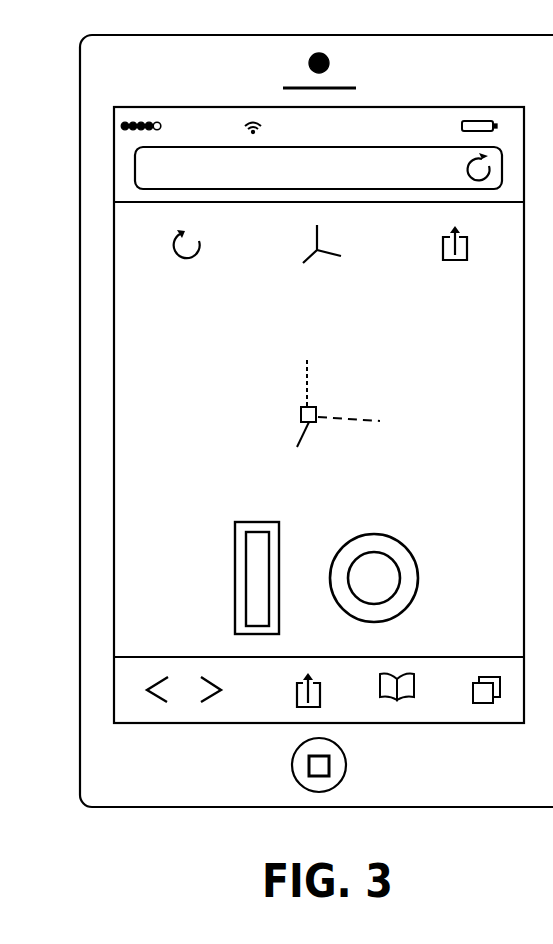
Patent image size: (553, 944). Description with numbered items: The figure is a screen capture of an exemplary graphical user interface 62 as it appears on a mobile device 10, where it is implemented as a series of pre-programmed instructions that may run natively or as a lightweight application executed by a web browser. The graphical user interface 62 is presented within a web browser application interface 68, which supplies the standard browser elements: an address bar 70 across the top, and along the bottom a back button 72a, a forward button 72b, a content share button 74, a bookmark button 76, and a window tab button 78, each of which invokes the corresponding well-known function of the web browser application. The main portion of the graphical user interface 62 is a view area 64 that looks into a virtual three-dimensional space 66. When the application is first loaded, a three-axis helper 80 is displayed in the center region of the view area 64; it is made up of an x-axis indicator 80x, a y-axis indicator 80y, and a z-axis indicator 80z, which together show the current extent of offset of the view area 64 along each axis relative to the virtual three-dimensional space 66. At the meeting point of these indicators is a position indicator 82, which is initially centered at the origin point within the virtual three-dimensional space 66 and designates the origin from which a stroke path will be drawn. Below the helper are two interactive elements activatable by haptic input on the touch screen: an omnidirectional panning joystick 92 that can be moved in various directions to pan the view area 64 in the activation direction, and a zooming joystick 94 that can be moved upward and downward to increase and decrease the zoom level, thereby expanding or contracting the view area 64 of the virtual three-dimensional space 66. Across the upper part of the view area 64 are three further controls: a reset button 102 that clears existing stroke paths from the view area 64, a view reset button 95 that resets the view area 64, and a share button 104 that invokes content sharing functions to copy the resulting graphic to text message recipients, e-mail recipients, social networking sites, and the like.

The mobile device 10 is at (80, 592).
The graphical user interface 62 is at (114, 470).
The view area 64 is at (205, 477).
The virtual three-dimensional space 66 is at (344, 510).
The web browser application interface 68 is at (115, 689).
The address bar 70 is at (137, 169).
The back button 72a is at (159, 700).
The forward button 72b is at (208, 700).
The content share button 74 is at (297, 699).
The bookmark button 76 is at (395, 700).
The window tab button 78 is at (483, 703).
The three-axis helper 80 is at (304, 406).
The x-axis indicator 80x is at (353, 420).
The y-axis indicator 80y is at (308, 372).
The z-axis indicator 80z is at (297, 447).
The position indicator 82 is at (318, 410).
The omnidirectional panning joystick 92 is at (418, 580).
The zooming joystick 94 is at (235, 587).
The view reset button 95 is at (320, 233).
The reset button 102 is at (200, 244).
The share button 104 is at (467, 247).